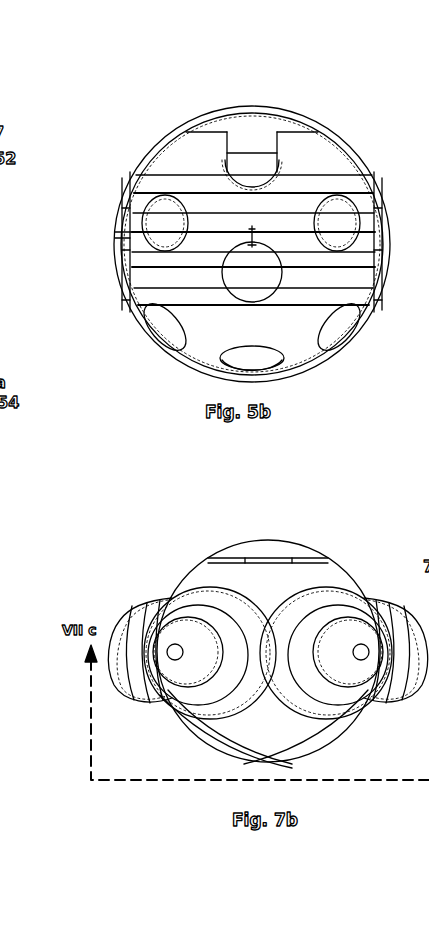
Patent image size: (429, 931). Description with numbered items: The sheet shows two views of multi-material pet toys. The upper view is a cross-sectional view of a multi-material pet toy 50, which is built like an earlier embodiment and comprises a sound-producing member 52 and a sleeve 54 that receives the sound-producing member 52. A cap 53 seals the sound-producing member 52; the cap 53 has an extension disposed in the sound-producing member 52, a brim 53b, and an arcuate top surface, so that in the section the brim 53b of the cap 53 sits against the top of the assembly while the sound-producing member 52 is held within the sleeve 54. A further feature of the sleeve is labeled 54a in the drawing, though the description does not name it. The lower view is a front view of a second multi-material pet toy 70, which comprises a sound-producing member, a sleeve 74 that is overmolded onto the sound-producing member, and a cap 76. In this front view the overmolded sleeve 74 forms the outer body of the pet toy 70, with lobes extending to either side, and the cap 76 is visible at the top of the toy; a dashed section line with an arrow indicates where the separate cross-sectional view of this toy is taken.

In FIG. 5B, the multi-material pet toy 50 is at (86, 110).
In FIG. 5B, the sound-producing member 52 is at (261, 245).
In FIG. 5B, the cap 53 is at (216, 134).
In FIG. 5B, the brim 53b is at (243, 237).
In FIG. 5B, the sleeve 54 is at (211, 220).
In FIG. 5B, the flange 54a is at (80, 212).
In FIG. 7B, the multi-material pet toy 70 is at (148, 553).
In FIG. 7B, the sleeve 74 is at (241, 629).
In FIG. 7B, the cap 76 is at (253, 528).